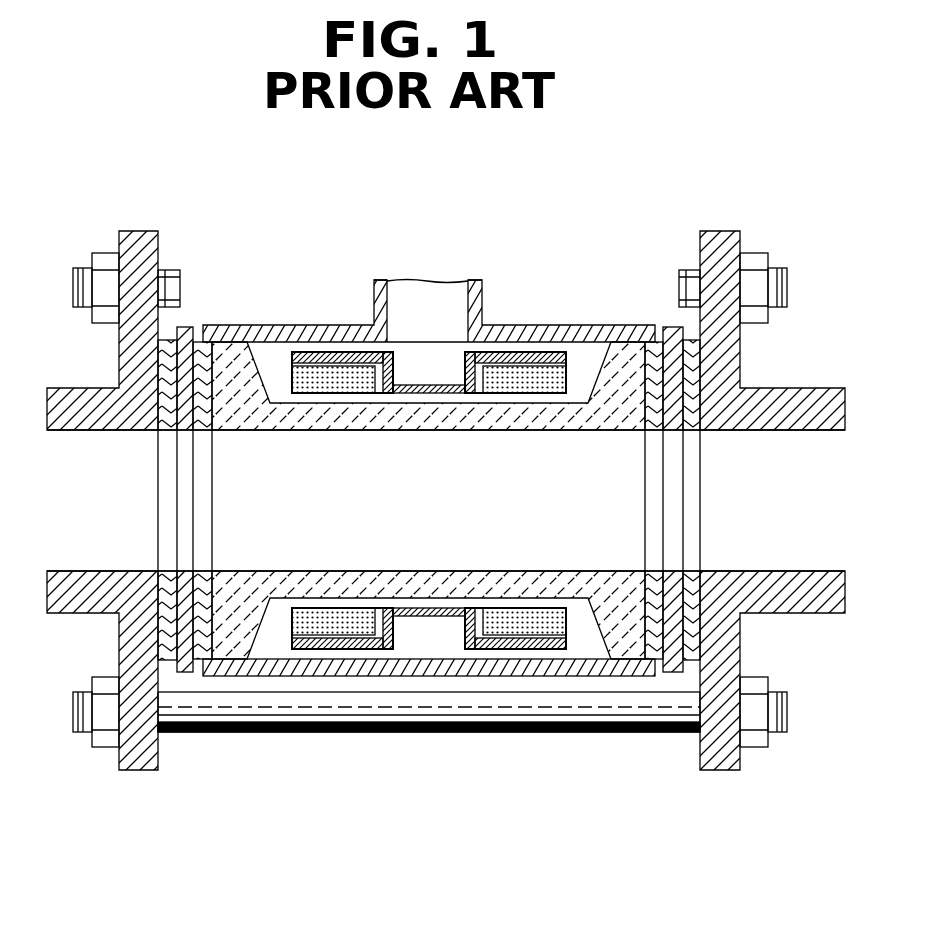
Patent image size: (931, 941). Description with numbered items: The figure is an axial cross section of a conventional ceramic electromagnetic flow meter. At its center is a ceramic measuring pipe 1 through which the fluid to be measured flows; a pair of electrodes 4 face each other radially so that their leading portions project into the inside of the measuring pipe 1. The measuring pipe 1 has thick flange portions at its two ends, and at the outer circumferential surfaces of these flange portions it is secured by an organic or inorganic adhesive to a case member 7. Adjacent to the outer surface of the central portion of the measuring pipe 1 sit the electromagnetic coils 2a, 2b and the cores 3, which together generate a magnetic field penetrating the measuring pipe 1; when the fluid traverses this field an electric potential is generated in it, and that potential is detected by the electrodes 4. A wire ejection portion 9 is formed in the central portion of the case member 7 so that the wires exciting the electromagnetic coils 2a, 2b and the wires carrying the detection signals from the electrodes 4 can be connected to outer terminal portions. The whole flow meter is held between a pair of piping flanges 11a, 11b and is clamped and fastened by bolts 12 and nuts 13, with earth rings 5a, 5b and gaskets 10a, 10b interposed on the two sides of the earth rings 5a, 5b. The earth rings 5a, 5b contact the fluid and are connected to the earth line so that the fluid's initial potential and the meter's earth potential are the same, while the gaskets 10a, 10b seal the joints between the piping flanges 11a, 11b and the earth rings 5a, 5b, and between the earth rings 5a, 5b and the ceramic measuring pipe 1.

The ceramic measuring pipe 1 is at (365, 431).
The electromagnetic coil 2a is at (320, 370).
The electromagnetic coil 2b is at (317, 636).
The core 3 is at (393, 630).
The electrode 4 is at (428, 500).
The earth ring 5a is at (186, 674).
The earth ring 5b is at (672, 674).
The case member 7 is at (562, 325).
The wire ejection portion 9 is at (440, 290).
The gasket 10a is at (163, 440).
The gasket 10b is at (203, 440).
The piping flange 11a is at (138, 240).
The piping flange 11b is at (712, 235).
The bolt 12 is at (507, 718).
The nut 13 is at (752, 742).